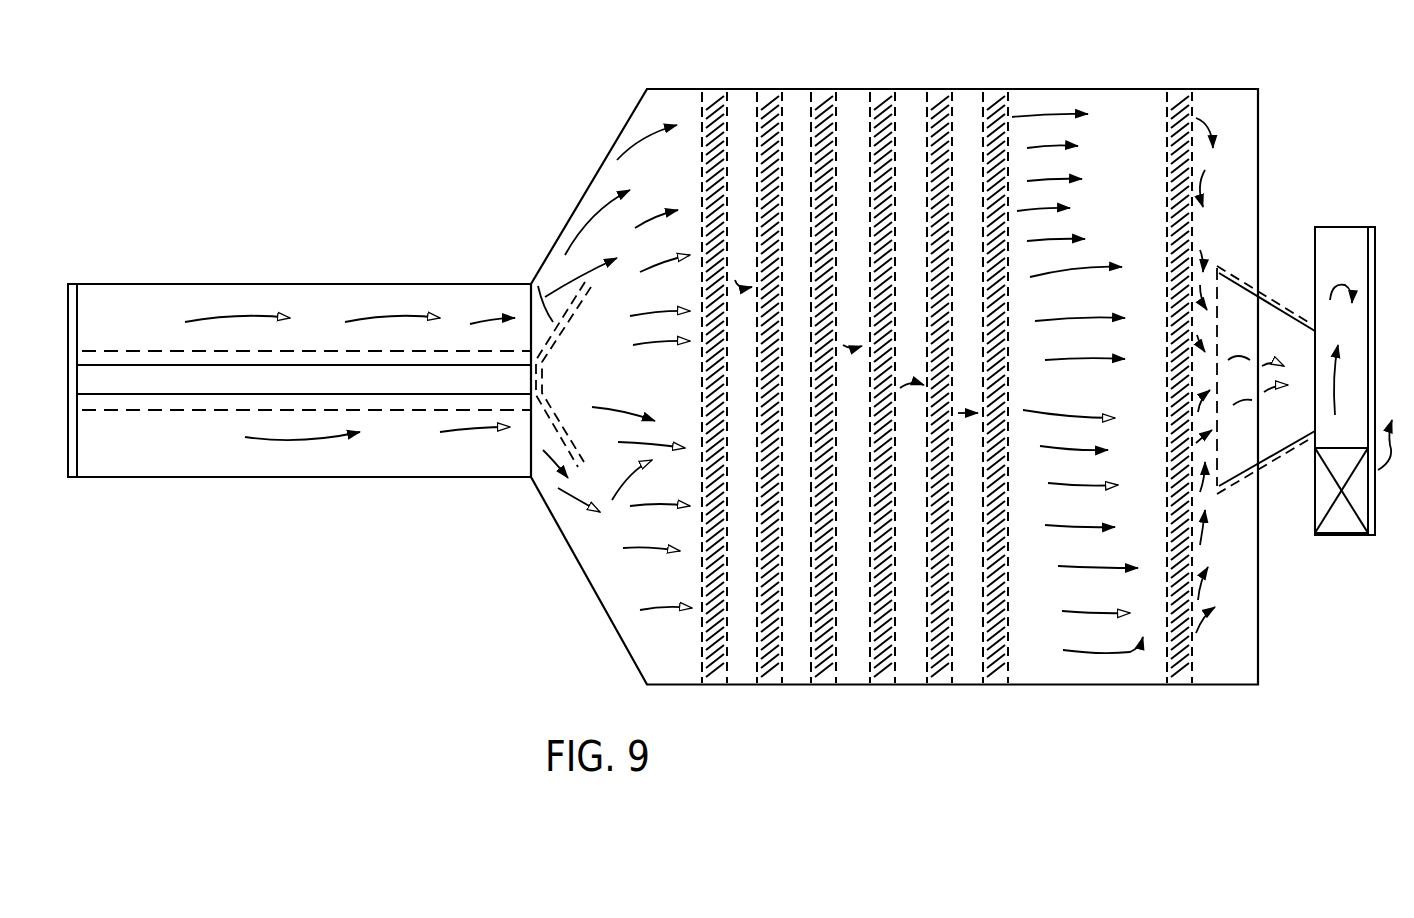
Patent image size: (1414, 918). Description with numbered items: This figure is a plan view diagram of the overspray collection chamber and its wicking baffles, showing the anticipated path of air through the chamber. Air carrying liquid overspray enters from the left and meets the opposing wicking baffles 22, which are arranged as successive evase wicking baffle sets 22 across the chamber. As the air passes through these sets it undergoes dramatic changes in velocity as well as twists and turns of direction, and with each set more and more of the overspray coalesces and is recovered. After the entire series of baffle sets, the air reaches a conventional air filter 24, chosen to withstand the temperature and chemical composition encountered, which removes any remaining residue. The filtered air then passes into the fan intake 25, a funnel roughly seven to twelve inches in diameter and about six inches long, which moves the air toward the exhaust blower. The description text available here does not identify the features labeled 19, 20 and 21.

The deflector 19 is at (536, 272).
The housing 20 is at (1038, 88).
The plenum space 21 is at (662, 107).
The wicking baffles 22 is at (990, 80).
The air filter 24 is at (1180, 86).
The fan intake 25 is at (1287, 300).